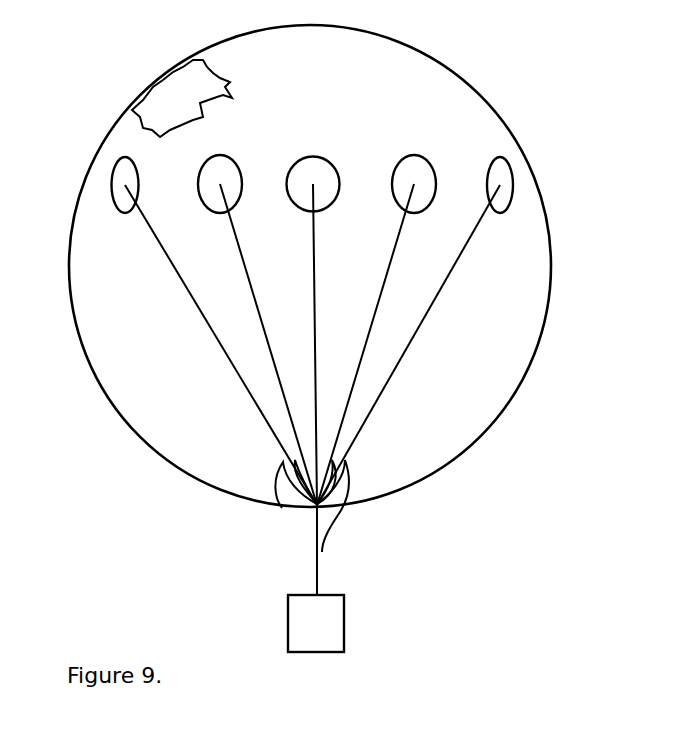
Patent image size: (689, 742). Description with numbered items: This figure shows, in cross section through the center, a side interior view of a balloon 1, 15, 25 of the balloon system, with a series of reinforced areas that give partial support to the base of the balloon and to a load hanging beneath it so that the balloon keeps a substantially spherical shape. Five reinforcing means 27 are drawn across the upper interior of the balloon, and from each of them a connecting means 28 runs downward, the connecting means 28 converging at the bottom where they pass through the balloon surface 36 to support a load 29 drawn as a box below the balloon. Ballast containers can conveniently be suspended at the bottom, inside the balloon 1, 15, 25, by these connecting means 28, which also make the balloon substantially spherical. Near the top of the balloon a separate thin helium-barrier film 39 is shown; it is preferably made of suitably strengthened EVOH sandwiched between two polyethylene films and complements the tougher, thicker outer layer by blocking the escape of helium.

The central balloon 1 is at (336, 266).
The separate balloon 15 is at (336, 266).
The balloon 25 is at (336, 266).
The reinforcing means 27 is at (117, 158).
The connecting means 28 is at (282, 508).
The load 29 is at (344, 618).
The balloon surface 36 is at (458, 75).
The helium-barrier film 39 is at (190, 87).